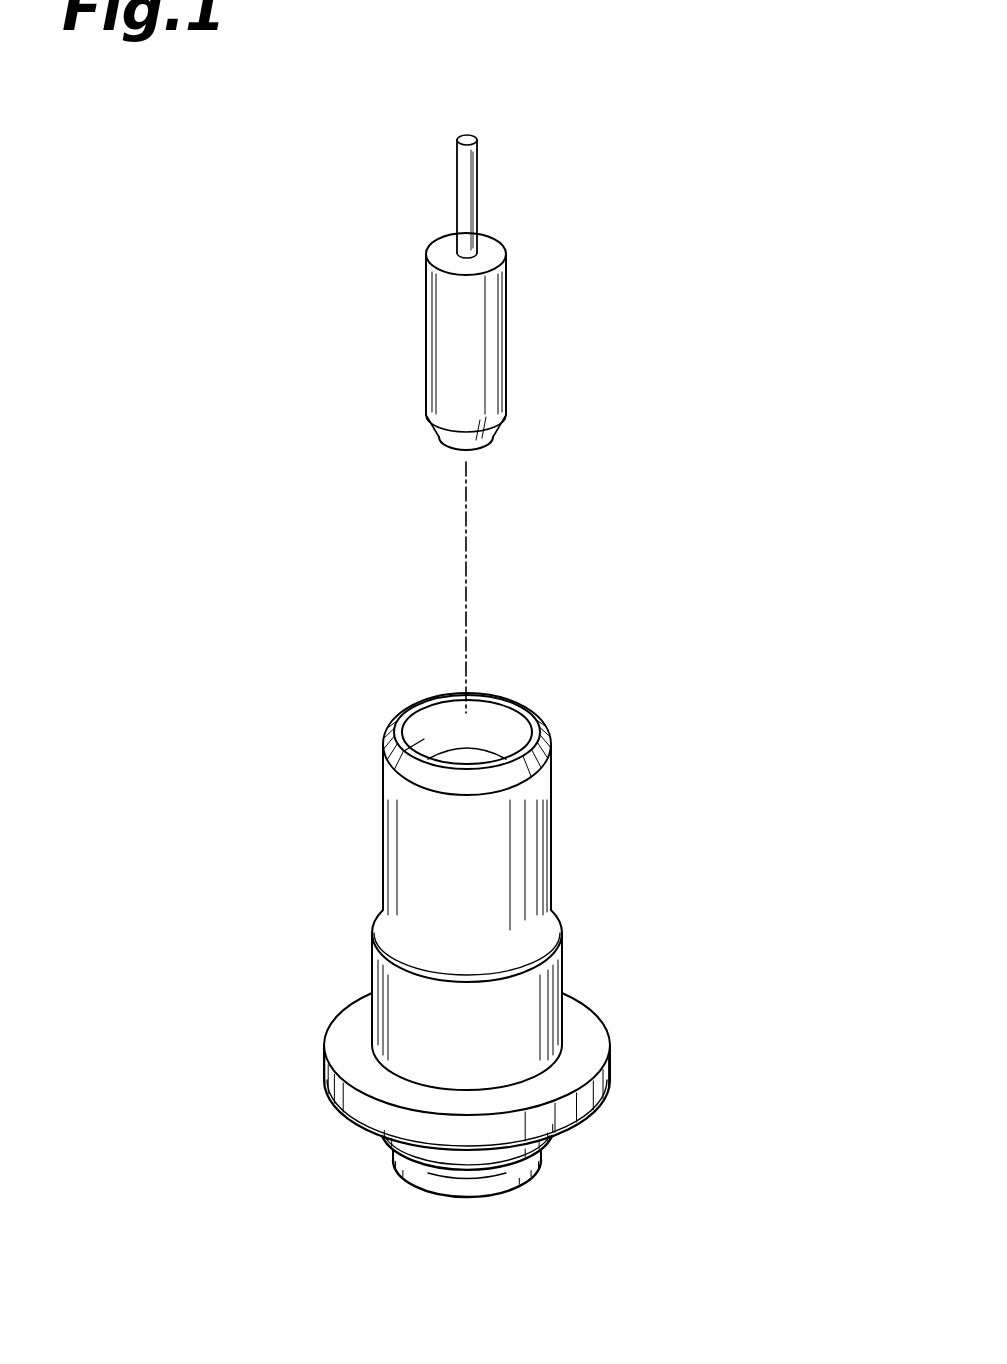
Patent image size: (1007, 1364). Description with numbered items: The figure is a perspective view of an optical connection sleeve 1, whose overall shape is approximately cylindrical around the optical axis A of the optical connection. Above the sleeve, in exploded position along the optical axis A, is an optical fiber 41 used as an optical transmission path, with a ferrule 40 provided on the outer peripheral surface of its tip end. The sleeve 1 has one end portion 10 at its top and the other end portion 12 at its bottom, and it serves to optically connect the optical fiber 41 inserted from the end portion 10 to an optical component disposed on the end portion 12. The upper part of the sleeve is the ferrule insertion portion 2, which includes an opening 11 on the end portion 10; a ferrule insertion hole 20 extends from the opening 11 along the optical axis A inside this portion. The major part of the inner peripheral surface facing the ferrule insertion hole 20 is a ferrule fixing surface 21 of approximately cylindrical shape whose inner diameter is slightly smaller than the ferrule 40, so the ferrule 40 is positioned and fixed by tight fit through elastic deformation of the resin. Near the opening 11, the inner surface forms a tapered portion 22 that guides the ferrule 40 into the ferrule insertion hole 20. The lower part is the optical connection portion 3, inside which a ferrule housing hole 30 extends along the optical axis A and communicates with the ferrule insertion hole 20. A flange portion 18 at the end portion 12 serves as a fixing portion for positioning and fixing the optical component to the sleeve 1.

The optical connection sleeve 1 is at (775, 847).
The ferrule insertion portion 2 is at (497, 764).
The optical connection portion 3 is at (488, 1110).
The one end portion 10 is at (361, 718).
The opening 11 is at (430, 700).
The other end portion 12 is at (335, 1135).
The flange portion 18 is at (543, 1173).
The ferrule insertion hole 20 is at (487, 718).
The ferrule fixing surface 21 is at (477, 762).
The tapered portion 22 is at (387, 763).
The ferrule housing hole 30 is at (494, 1202).
The ferrule 40 is at (475, 292).
The optical fiber 41 is at (462, 198).
The optical axis A is at (468, 562).